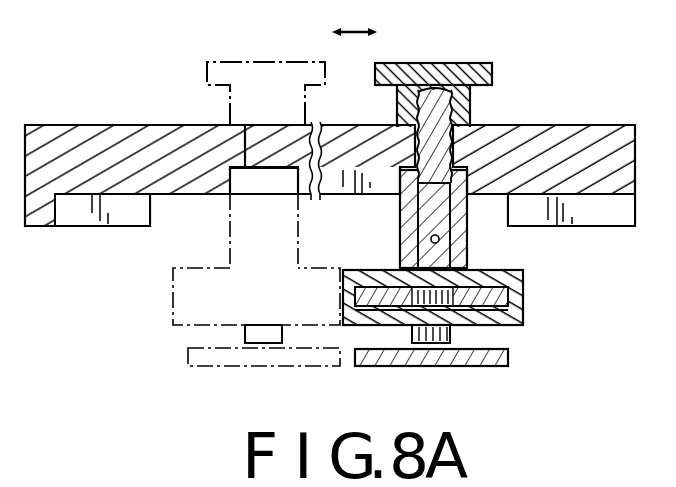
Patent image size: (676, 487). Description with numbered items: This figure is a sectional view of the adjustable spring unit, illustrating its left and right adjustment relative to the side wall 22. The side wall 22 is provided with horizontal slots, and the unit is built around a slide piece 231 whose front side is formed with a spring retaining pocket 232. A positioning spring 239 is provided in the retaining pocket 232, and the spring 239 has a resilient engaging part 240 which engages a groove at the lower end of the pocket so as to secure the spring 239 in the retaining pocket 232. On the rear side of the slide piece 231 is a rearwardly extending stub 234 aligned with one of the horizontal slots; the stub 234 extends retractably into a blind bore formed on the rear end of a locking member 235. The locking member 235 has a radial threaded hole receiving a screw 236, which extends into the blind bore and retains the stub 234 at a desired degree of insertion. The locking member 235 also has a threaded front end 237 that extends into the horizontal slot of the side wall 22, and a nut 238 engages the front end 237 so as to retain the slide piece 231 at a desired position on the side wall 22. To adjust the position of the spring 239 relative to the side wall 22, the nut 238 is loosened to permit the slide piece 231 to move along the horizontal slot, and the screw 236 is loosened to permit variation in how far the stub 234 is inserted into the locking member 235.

The side wall 22 is at (611, 125).
The nut 238 is at (478, 63).
The threaded front end 237 is at (472, 117).
The stub 234 is at (452, 210).
The locking member 235 is at (470, 232).
The screw 236 is at (466, 255).
The slide piece 231 is at (525, 273).
The spring retaining pocket 232 is at (525, 296).
The resilient engaging part 240 is at (450, 334).
The positioning spring 239 is at (508, 366).